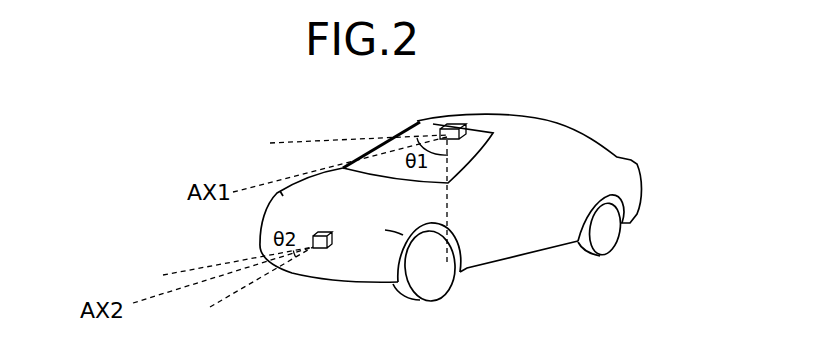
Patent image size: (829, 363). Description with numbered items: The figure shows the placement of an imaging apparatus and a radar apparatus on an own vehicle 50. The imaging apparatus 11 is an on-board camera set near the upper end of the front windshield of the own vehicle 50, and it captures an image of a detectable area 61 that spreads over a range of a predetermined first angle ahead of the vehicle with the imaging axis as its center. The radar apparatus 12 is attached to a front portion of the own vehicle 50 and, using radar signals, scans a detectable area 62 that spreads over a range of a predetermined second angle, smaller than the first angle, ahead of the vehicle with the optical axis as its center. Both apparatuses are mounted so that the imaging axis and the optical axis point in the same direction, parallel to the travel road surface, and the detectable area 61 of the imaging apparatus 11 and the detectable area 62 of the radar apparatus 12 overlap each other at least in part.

The own vehicle 50 is at (553, 122).
The imaging apparatus 11 is at (454, 123).
The radar apparatus 12 is at (334, 244).
The detectable area 61 is at (288, 142).
The detectable area 62 is at (177, 273).